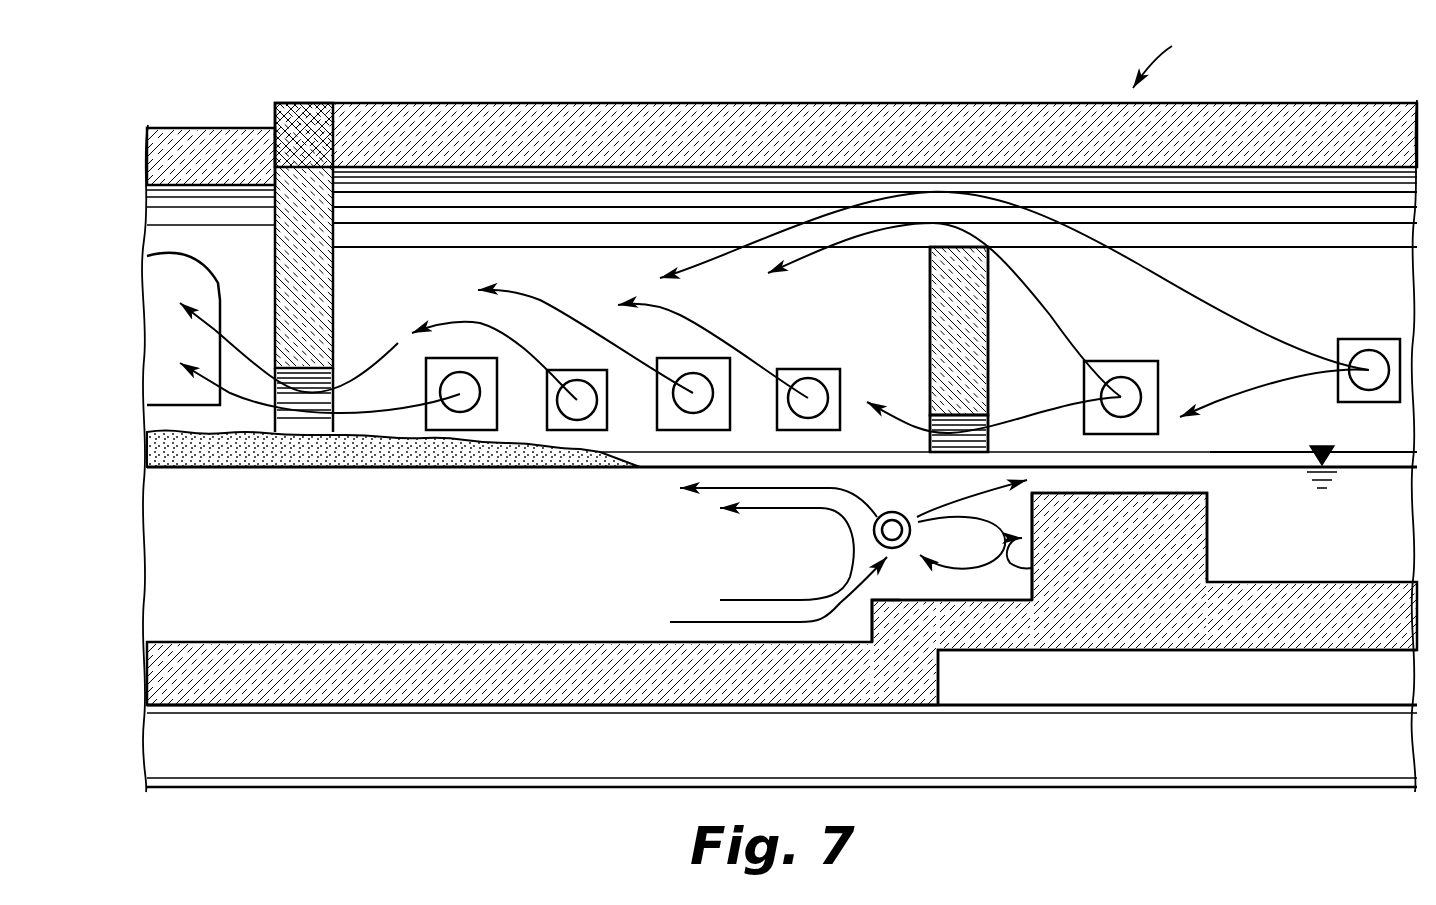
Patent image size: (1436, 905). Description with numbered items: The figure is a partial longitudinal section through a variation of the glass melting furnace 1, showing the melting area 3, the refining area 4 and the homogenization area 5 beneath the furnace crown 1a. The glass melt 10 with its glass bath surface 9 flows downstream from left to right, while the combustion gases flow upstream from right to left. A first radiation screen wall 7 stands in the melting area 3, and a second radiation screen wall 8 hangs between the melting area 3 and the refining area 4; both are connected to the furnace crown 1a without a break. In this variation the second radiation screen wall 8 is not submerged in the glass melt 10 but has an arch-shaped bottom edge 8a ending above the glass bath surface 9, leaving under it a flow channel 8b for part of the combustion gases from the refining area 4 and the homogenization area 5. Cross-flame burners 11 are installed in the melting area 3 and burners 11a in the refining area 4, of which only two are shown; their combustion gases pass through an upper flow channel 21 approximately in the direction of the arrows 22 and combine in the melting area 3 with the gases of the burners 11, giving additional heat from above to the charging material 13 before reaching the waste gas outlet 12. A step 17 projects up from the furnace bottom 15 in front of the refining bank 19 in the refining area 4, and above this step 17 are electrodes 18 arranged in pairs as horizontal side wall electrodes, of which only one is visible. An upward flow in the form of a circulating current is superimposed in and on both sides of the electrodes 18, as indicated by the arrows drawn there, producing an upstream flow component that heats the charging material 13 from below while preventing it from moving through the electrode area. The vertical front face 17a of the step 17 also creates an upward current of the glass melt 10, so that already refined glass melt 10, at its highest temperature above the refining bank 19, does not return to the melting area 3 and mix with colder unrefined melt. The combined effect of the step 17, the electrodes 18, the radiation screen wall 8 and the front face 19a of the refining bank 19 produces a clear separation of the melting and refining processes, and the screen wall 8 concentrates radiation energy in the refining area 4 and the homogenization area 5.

The glass melting furnace 1 is at (1176, 56).
The furnace crown 1a is at (797, 130).
The melting area 3 is at (597, 290).
The refining area 4 is at (1088, 298).
The homogenization area 5 is at (1297, 298).
The first radiation screen wall 7 is at (312, 270).
The second radiation screen wall 8 is at (950, 315).
The arch-shaped bottom edge 8a is at (957, 410).
The flow channel 8b is at (935, 440).
The glass bath surface 9 is at (748, 466).
The glass melt 10 is at (506, 580).
The cross-flame burners 11 is at (445, 398).
The burners 11a is at (1121, 380).
The waste gas outlet 12 is at (187, 280).
The charging material 13 is at (216, 450).
The furnace bottom 15 is at (358, 640).
The step 17 is at (945, 625).
The vertical front face 17a is at (870, 620).
The electrodes 18 is at (875, 530).
The refining bank 19 is at (1175, 493).
The front face 19a is at (1038, 577).
The upper flow channel 21 is at (947, 200).
The arrows 22 is at (1035, 288).